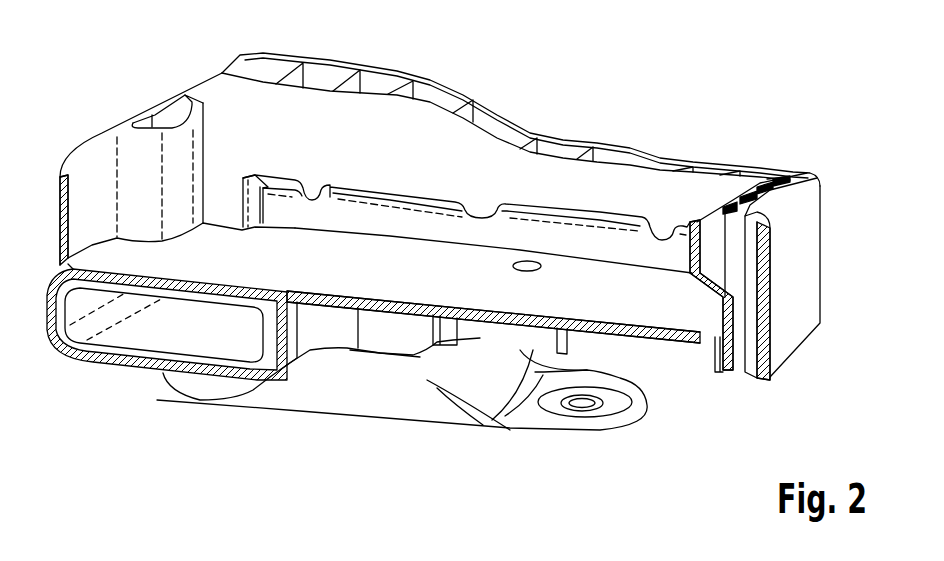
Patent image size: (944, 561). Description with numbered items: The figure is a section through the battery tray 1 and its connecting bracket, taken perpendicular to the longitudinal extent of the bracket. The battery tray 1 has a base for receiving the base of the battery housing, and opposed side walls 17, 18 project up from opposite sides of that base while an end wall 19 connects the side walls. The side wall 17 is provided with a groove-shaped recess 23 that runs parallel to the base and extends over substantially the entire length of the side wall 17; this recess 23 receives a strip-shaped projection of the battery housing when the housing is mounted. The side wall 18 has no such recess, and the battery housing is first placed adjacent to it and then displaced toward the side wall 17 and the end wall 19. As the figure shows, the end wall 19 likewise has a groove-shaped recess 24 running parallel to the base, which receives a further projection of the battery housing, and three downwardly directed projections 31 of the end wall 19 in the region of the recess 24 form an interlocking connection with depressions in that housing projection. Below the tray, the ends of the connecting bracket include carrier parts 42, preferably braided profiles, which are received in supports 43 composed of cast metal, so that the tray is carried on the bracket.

The battery tray 1 is at (578, 80).
The side wall 17 is at (740, 246).
The side wall 18 is at (97, 169).
The end wall 19 is at (243, 99).
The groove-shaped recess 23 is at (710, 318).
The groove-shaped recess 24 is at (605, 245).
The downwardly directed projections 31 is at (313, 186).
The carrier part 42 is at (157, 359).
The support 43 is at (311, 405).